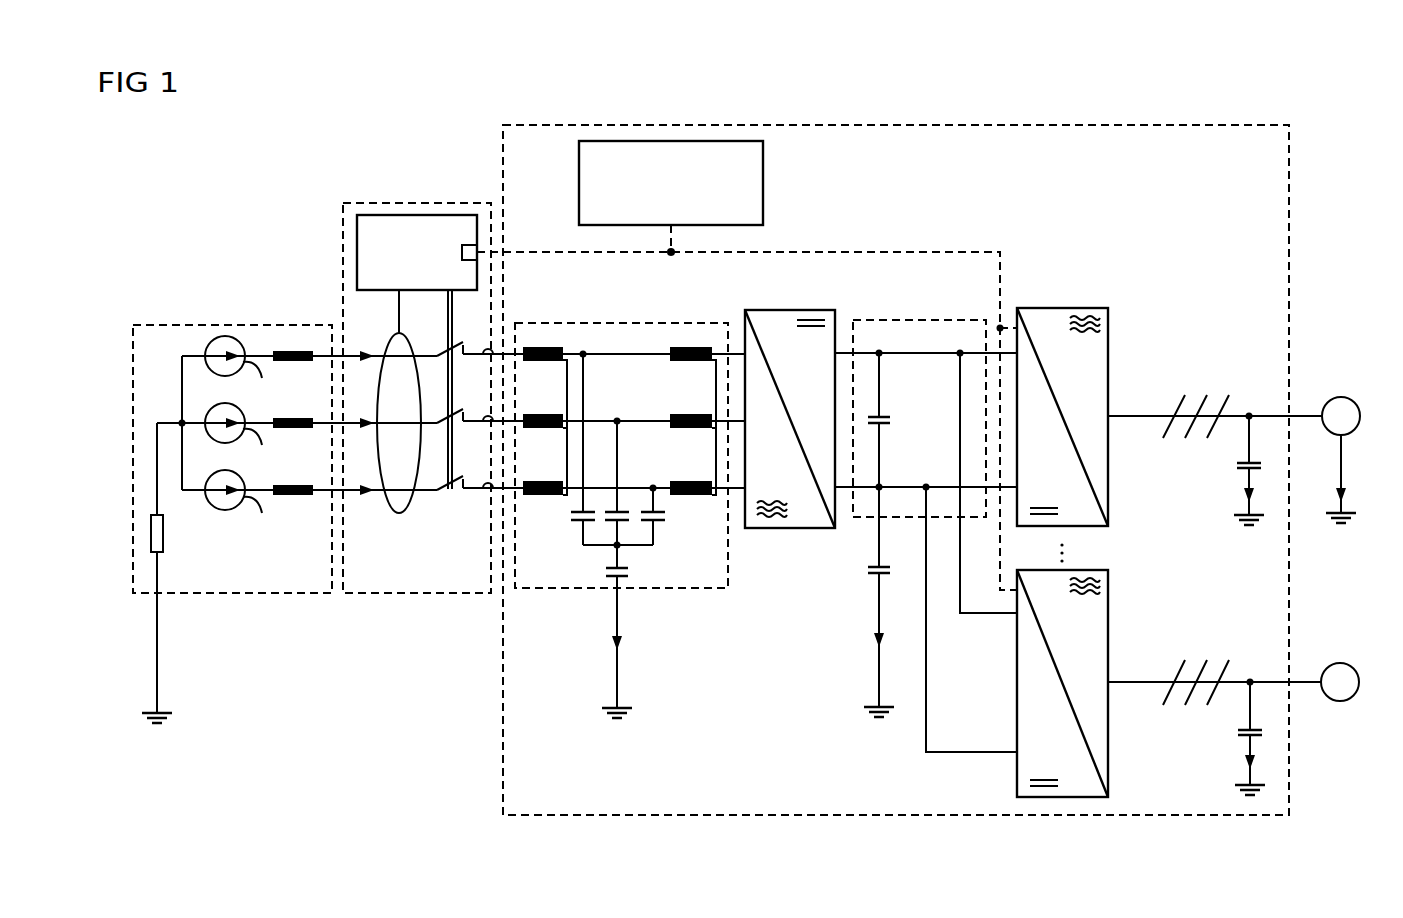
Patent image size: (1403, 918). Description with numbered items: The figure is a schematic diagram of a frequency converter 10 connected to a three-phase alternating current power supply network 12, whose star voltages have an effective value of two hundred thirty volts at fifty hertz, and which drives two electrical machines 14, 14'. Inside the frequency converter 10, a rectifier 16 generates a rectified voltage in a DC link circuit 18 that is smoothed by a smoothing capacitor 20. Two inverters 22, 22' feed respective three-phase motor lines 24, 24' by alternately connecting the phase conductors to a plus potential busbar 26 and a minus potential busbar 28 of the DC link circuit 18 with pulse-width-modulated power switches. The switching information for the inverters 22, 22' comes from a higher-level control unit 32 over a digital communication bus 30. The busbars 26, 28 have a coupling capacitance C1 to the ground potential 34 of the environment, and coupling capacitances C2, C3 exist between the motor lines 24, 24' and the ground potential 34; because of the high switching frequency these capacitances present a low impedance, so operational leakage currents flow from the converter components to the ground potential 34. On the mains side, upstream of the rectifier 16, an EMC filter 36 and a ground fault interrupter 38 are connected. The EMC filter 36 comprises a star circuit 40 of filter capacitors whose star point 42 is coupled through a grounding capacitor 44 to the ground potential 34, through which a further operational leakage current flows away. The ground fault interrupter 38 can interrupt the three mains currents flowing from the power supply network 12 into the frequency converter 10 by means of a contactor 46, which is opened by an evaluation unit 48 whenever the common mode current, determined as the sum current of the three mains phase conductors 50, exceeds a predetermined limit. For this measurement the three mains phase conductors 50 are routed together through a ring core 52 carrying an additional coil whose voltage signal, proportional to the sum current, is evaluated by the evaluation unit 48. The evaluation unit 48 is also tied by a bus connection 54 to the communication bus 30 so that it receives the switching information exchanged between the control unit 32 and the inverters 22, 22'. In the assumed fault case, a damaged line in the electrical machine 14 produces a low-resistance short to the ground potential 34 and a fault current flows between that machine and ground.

The frequency converter 10 is at (1290, 215).
The three-phase alternating current power supply network 12 is at (253, 593).
The electrical machine 14 is at (1336, 424).
The electrical machine 14' is at (1340, 649).
The rectifier 16 is at (780, 528).
The DC link circuit 18 is at (926, 505).
The smoothing capacitor 20 is at (883, 414).
The inverter 22 is at (1062, 405).
The inverter 22' is at (1097, 683).
The three-phase motor line 24 is at (1215, 397).
The three-phase motor line 24' is at (1214, 663).
The plus potential busbar 26 is at (940, 358).
The minus potential busbar 28 is at (907, 486).
The digital communication bus 30 is at (885, 251).
The control unit 32 is at (763, 180).
The ground potential 34 is at (166, 712).
The EMC filter 36 is at (630, 515).
The ground fault interrupter 38 is at (402, 432).
The star circuit of filter capacitors 40 is at (558, 527).
The star point 42 is at (620, 547).
The grounding capacitor 44 is at (625, 578).
The contactor 46 is at (448, 502).
The evaluation unit 48 is at (379, 252).
The mains phase conductors 50 is at (488, 496).
The ring core 52 is at (397, 514).
The bus connection 54 is at (462, 252).
The coupling capacitance C1 is at (873, 578).
The coupling capacitance C2 is at (1240, 470).
The coupling capacitance C3 is at (1240, 738).